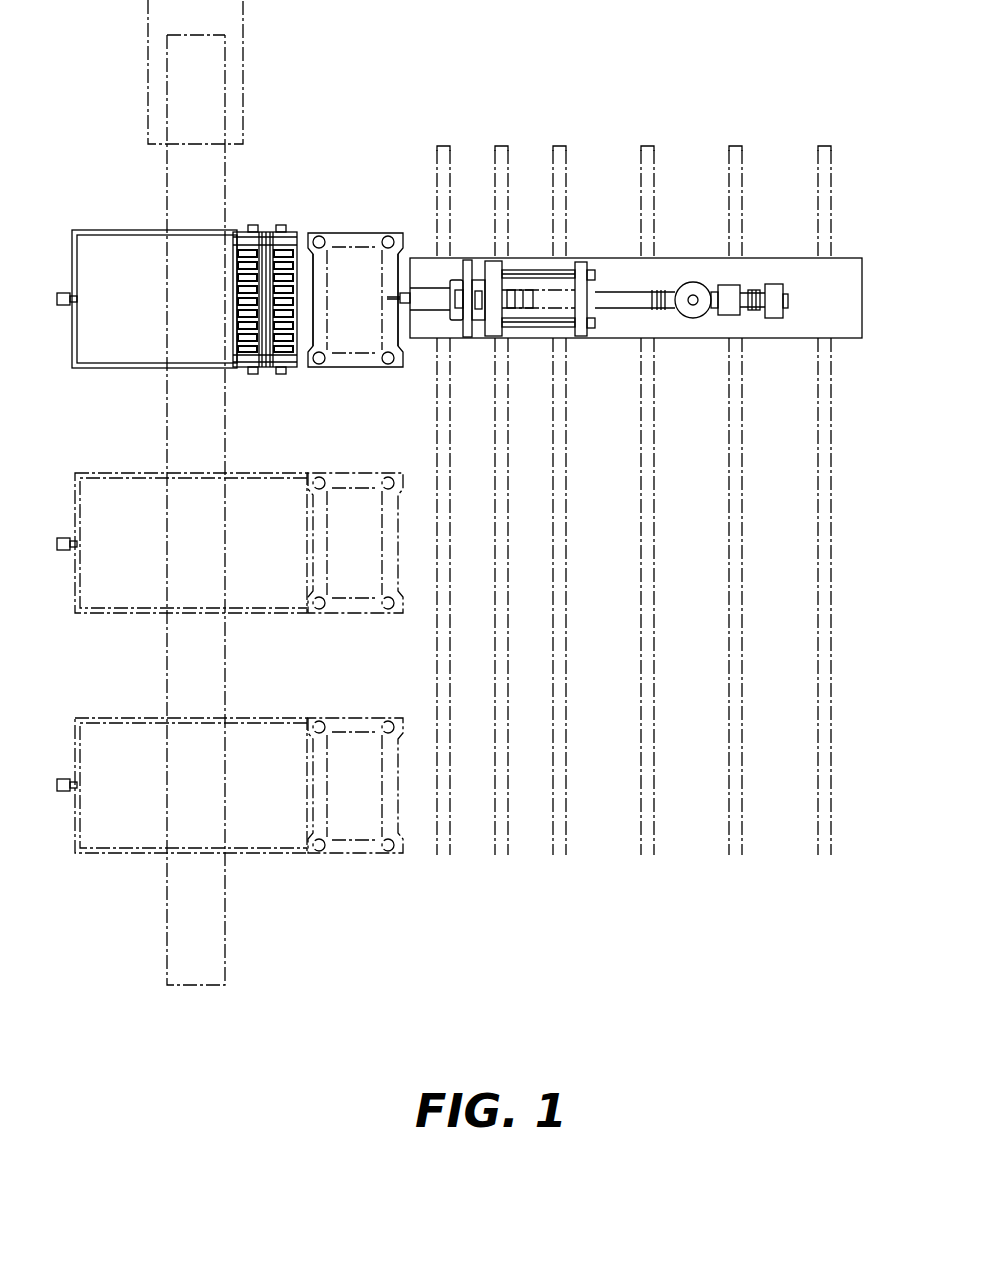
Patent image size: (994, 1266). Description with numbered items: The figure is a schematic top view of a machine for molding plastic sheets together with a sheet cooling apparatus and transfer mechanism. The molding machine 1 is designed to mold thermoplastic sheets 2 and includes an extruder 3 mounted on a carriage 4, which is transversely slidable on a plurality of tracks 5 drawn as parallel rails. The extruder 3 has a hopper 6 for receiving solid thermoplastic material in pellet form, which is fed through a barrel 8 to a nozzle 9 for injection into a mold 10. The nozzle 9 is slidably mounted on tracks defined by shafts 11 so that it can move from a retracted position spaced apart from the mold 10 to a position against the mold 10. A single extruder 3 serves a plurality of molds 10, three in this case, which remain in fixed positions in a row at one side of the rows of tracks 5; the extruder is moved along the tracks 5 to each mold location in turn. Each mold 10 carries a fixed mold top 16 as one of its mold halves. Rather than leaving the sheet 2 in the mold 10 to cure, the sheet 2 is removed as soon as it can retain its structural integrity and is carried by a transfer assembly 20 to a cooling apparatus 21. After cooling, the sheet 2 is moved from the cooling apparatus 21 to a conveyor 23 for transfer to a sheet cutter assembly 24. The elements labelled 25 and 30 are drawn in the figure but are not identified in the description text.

The molding machine 1 is at (763, 230).
The thermoplastic sheet 2 is at (347, 233).
The extruder 3 is at (776, 318).
The carriage 4 is at (862, 339).
The tracks 5 is at (641, 690).
The hopper 6 is at (689, 318).
The barrel 8 is at (666, 268).
The nozzle 9 is at (400, 293).
The mold 10 is at (345, 368).
The shafts 11 is at (532, 270).
The mold top 16 is at (375, 364).
The transfer assembly 20 is at (74, 231).
The cooling apparatus 21 is at (276, 224).
The conveyor 23 is at (168, 955).
The sheet cutter assembly 24 is at (243, 88).
The tray body 25 is at (118, 236).
The stopper 30 is at (62, 305).